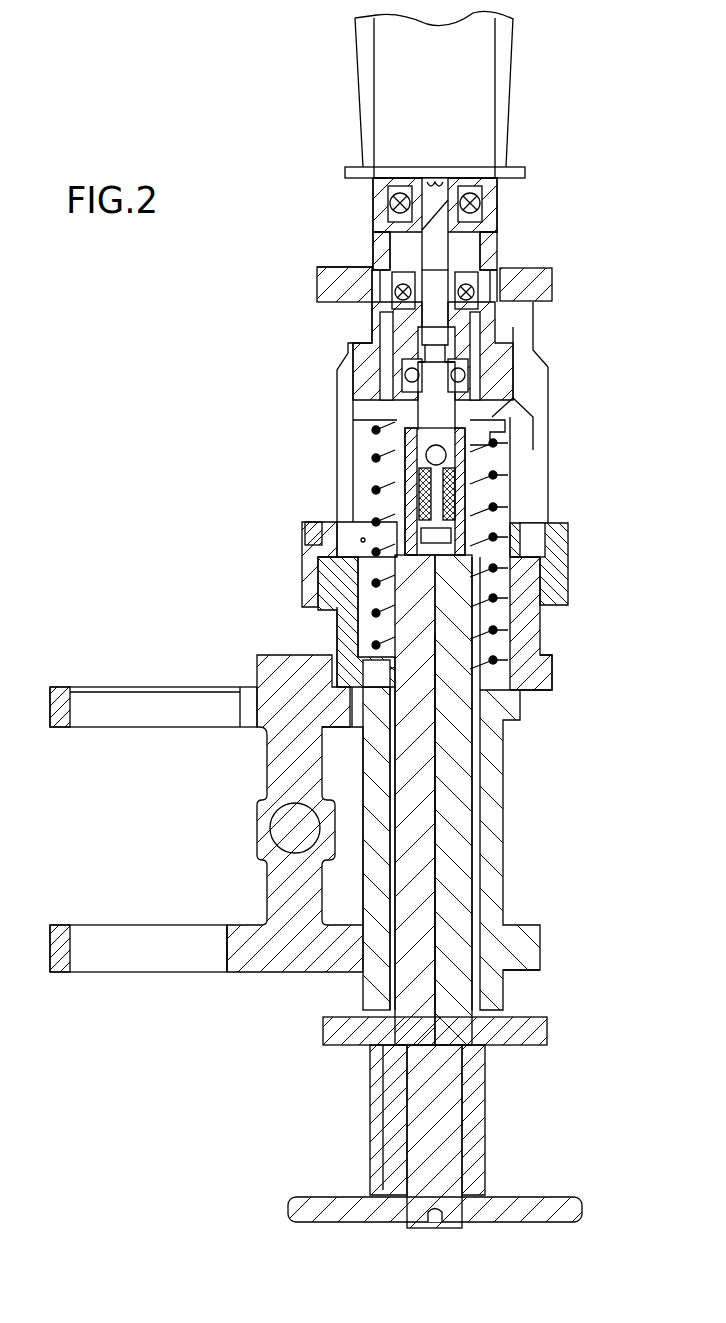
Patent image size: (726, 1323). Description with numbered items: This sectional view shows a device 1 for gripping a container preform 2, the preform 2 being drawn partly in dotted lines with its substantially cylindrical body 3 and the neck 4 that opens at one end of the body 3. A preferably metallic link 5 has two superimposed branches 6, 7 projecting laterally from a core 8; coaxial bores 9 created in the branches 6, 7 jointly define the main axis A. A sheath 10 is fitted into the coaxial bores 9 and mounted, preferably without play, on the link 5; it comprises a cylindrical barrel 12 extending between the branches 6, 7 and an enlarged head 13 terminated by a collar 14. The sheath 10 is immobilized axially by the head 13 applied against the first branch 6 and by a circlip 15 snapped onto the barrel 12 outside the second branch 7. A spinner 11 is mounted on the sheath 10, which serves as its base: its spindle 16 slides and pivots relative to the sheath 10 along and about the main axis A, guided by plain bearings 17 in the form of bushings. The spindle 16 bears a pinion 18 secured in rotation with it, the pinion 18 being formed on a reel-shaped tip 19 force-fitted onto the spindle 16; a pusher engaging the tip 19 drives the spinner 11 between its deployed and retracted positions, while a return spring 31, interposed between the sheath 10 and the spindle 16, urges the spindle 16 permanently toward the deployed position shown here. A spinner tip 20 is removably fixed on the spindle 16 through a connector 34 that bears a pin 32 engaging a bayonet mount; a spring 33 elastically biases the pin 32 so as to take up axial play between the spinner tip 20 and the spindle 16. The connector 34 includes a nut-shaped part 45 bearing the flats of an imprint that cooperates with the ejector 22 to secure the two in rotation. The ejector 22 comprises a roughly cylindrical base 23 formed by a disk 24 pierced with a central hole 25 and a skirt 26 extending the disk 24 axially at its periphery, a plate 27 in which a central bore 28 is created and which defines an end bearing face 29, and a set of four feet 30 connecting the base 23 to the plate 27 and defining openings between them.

The gripping device 1 is at (200, 345).
The container preform 2 is at (515, 86).
The body 3 is at (360, 56).
The neck 4 is at (372, 212).
The link 5 is at (56, 686).
The first branch 6 is at (55, 707).
The second branch 7 is at (60, 957).
The core 8 is at (272, 770).
The coaxial bores 9 is at (96, 717).
The sheath 10 is at (505, 821).
The spinner 11 is at (473, 860).
The barrel 12 is at (496, 786).
The head 13 is at (553, 666).
The collar 14 is at (538, 600).
The circlip 15 is at (508, 977).
The spindle 16 is at (462, 877).
The plain bearings 17 is at (482, 758).
The pinion 18 is at (557, 1200).
The tip 19 is at (486, 1128).
The spinner tip 20 is at (505, 328).
The ejector 22 is at (556, 277).
The base 23 is at (562, 542).
The disk 24 is at (348, 530).
The central hole 25 is at (347, 513).
The skirt 26 is at (303, 579).
The plate 27 is at (316, 286).
The central bore 28 is at (378, 292).
The end bearing face 29 is at (330, 268).
The feet 30 is at (337, 440).
The return spring 31 is at (490, 515).
The pin 32 is at (437, 446).
The spring 33 is at (472, 492).
The connector 34 is at (482, 462).
The nut-shaped part 45 is at (515, 377).
The main axis A is at (433, 793).